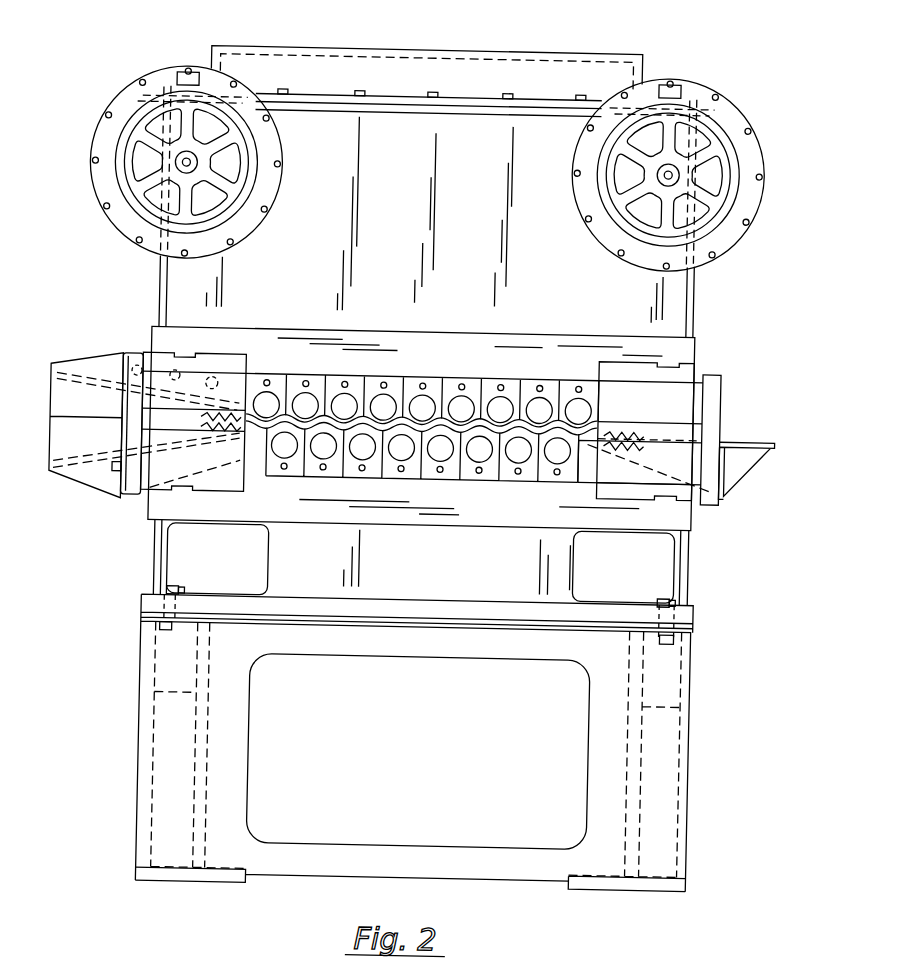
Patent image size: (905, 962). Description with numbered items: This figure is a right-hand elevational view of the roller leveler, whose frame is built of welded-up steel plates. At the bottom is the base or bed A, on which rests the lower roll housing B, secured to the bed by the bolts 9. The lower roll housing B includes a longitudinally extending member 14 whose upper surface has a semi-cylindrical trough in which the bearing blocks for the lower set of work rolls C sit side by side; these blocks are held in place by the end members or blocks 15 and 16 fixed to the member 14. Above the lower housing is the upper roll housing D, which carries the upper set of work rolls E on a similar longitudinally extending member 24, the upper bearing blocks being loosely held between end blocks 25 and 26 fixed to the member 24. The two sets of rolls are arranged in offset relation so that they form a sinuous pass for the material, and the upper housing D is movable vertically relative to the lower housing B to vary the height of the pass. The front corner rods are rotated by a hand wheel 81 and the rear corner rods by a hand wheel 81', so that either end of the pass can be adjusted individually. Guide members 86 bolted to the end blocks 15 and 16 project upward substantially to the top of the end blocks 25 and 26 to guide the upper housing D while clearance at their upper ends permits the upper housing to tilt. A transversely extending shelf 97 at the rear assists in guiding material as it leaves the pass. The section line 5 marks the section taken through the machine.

The upper roll housing D is at (447, 125).
The longitudinally extending member 24 is at (421, 342).
The hand wheel 81 is at (215, 162).
The hand wheel 81' is at (640, 174).
The end member or block 15 is at (252, 487).
The end member or block 25 is at (228, 367).
The end member or block 26 is at (613, 366).
The end member or block 16 is at (592, 489).
The upper set of work rolls E is at (464, 396).
The lower set of work rolls C is at (486, 452).
The section line 5- 5 is at (304, 550).
The guide member 86 is at (714, 391).
The shelf 97 is at (747, 435).
The longitudinally extending member 14 is at (406, 515).
The bolt 9 is at (181, 593).
The lower roll housing B is at (430, 590).
The base or bed A is at (297, 866).